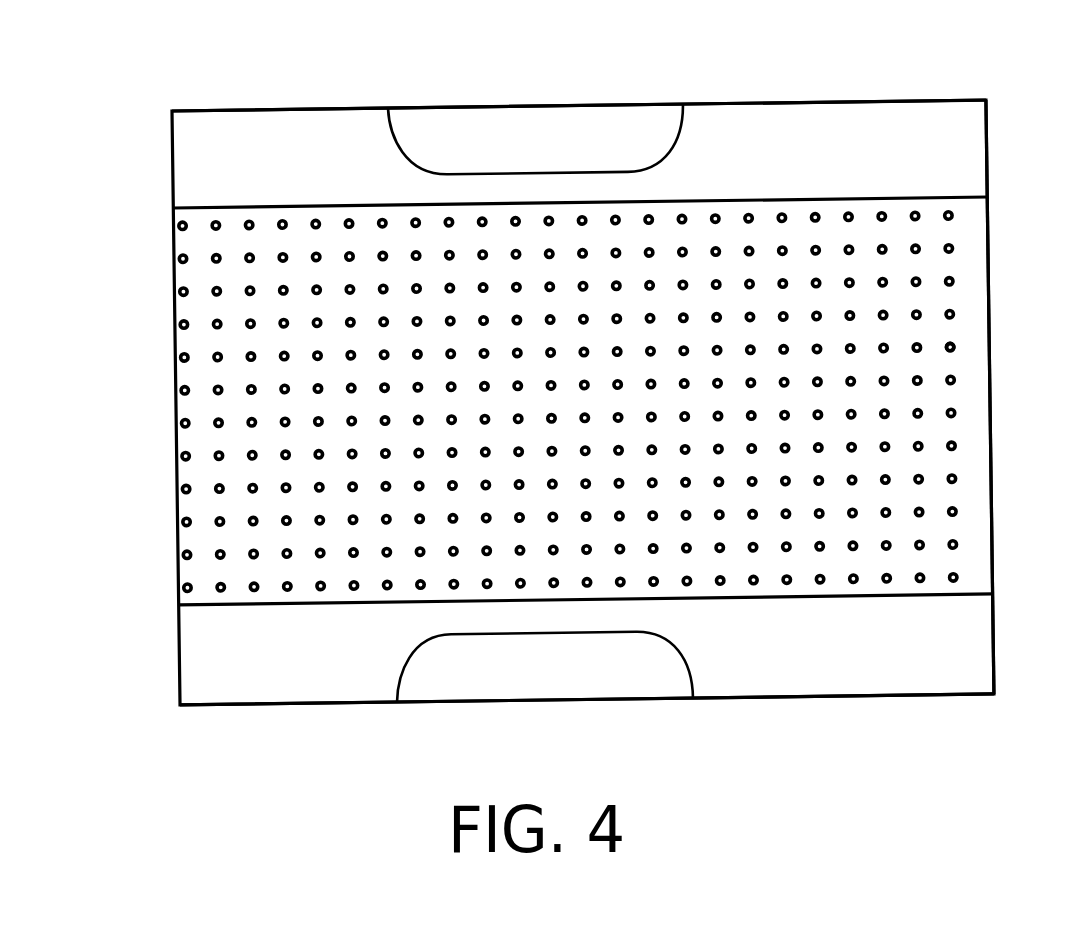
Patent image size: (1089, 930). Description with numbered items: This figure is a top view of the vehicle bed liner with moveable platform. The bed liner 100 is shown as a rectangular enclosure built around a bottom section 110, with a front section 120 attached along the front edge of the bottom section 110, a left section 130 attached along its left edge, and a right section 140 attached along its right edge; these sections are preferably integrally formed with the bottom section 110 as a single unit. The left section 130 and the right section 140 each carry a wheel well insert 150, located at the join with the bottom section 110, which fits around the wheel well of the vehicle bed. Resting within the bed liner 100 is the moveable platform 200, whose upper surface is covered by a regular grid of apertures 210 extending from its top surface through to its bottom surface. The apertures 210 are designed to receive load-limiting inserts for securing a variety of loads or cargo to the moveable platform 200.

The bed liner 100 is at (188, 144).
The bottom section 110 is at (905, 137).
The front section 120 is at (988, 158).
The left section 130 is at (800, 100).
The right section 140 is at (838, 693).
The wheel well inserts 150 is at (530, 122).
The moveable platform 200 is at (973, 295).
The apertures 210 is at (957, 346).